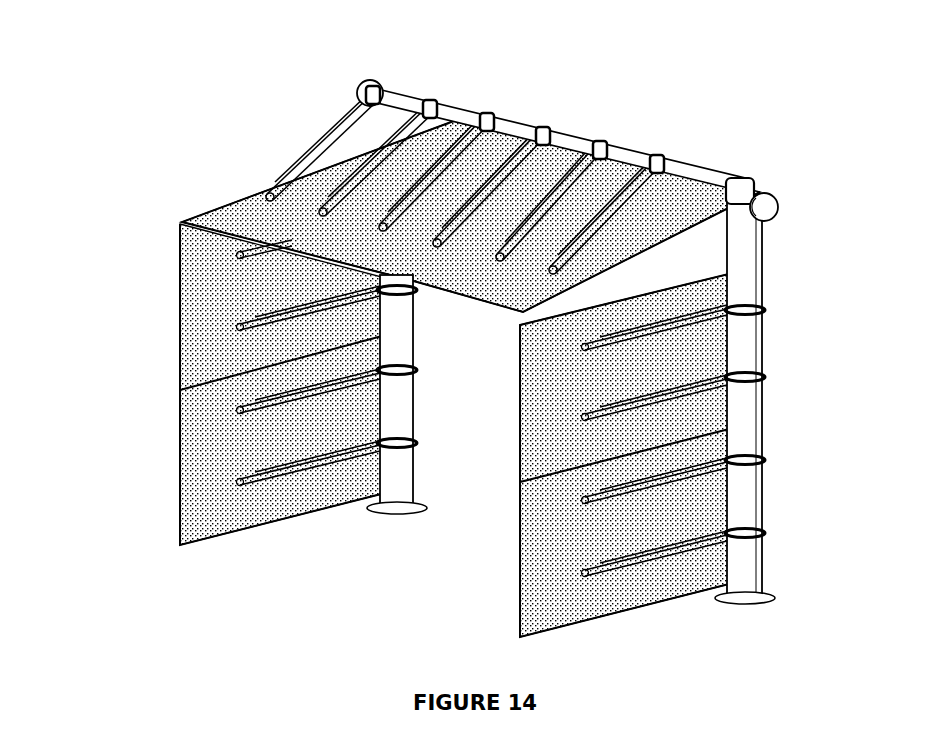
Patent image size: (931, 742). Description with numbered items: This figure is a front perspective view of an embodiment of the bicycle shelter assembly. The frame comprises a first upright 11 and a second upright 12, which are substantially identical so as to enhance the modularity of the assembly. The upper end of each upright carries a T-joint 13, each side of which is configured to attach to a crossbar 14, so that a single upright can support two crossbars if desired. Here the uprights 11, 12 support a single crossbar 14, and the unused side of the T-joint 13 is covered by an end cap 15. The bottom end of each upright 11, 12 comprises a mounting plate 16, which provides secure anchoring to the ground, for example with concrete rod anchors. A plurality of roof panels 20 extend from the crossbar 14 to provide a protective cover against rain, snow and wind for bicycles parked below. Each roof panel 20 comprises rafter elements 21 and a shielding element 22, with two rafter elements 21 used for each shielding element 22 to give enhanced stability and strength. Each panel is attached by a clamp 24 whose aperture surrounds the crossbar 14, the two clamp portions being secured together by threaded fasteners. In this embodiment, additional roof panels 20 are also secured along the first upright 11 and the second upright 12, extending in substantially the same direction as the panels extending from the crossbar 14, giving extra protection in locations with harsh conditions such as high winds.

The first upright 11 is at (403, 407).
The second upright 12 is at (760, 508).
The T-joint 13 is at (731, 192).
The crossbar 14 is at (553, 148).
The end cap 15 is at (766, 205).
The mounting plate 16 is at (764, 594).
The roof panel 20 is at (213, 433).
The rafter element 21 is at (700, 402).
The shielding element 22 is at (548, 423).
The clamp 24 is at (757, 304).